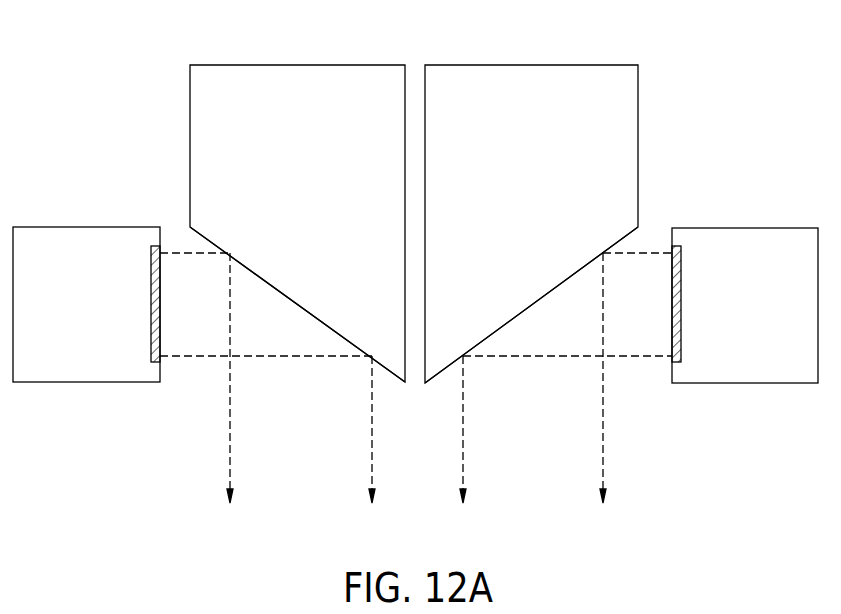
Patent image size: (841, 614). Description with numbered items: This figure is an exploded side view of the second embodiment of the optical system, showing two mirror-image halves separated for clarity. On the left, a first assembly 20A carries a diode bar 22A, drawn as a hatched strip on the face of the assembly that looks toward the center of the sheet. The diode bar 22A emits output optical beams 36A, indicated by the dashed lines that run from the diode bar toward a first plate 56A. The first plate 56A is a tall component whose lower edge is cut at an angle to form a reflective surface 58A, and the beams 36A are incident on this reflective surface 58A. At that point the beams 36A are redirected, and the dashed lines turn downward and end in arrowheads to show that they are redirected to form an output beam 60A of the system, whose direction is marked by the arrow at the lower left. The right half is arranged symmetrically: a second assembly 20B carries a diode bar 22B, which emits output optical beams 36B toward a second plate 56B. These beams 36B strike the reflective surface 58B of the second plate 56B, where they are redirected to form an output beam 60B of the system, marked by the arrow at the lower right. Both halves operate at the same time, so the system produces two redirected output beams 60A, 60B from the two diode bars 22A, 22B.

The first assembly 20A is at (46, 227).
The diode bar 22A is at (151, 263).
The first plate 56A is at (297, 65).
The reflective surface 58A is at (285, 296).
The output optical beams 36A is at (372, 440).
The output beam 60A is at (198, 488).
The second assembly 20B is at (782, 228).
The diode bar 22B is at (681, 266).
The second plate 56B is at (529, 65).
The reflective surface 58B is at (547, 296).
The output optical beams 36B is at (603, 440).
The output beam 60B is at (636, 488).